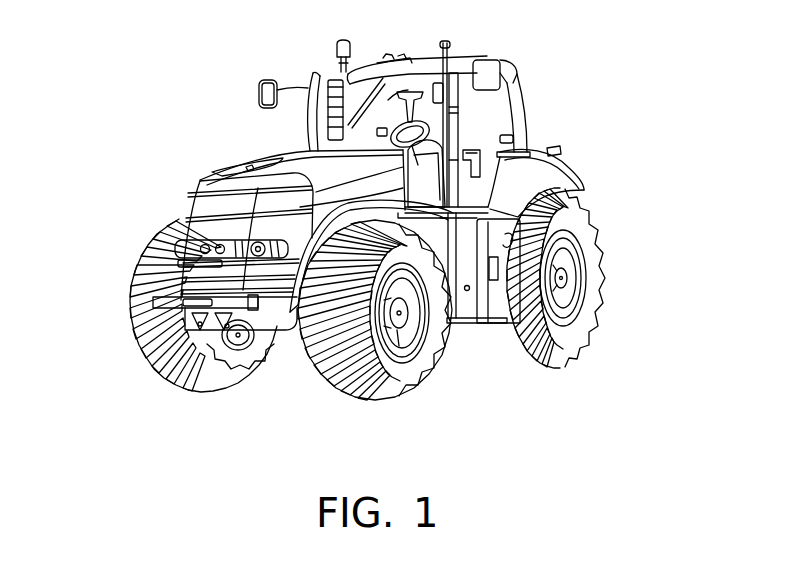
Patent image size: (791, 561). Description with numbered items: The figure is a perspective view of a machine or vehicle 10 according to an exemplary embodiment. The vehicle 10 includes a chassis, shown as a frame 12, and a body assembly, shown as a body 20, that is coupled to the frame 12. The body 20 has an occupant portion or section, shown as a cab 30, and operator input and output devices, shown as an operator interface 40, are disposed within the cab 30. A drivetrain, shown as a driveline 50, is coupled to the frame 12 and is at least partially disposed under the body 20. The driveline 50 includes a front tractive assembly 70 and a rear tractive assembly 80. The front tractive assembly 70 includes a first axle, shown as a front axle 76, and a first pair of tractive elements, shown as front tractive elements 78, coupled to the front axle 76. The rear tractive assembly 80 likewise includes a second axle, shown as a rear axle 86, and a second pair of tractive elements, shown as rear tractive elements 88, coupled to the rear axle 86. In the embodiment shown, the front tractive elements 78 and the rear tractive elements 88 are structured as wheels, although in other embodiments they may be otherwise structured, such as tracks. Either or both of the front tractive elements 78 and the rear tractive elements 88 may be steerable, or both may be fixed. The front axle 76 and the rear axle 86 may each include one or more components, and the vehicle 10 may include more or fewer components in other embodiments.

The vehicle 10 is at (148, 58).
The frame 12 is at (291, 313).
The body 20 is at (200, 181).
The cab 30 is at (462, 56).
The operator interface 40 is at (427, 123).
The driveline 50 is at (497, 430).
The front tractive assembly 70 is at (178, 430).
The front axle 76 is at (427, 357).
The front tractive elements 78 is at (163, 385).
The rear tractive assembly 80 is at (623, 183).
The rear axle 86 is at (586, 285).
The rear tractive elements 88 is at (598, 309).